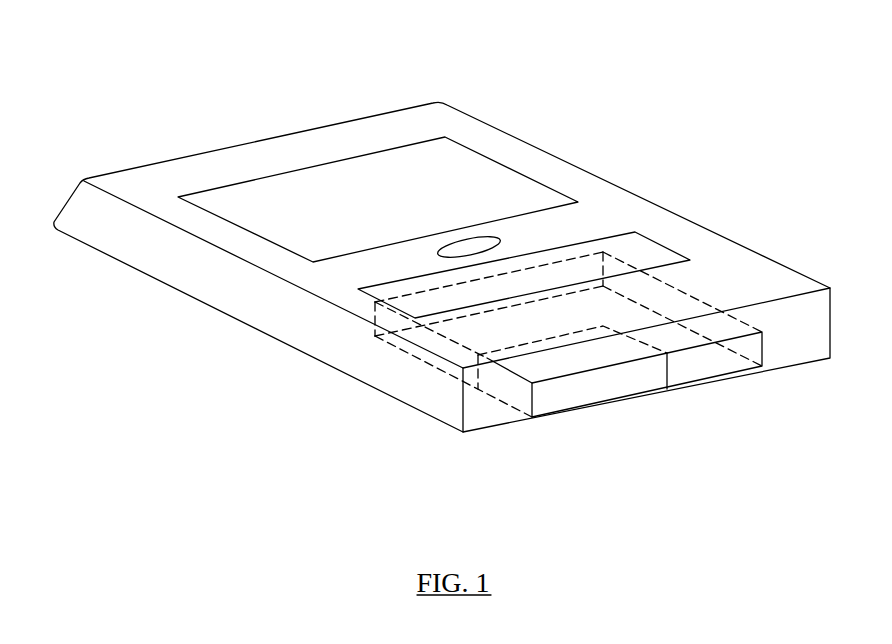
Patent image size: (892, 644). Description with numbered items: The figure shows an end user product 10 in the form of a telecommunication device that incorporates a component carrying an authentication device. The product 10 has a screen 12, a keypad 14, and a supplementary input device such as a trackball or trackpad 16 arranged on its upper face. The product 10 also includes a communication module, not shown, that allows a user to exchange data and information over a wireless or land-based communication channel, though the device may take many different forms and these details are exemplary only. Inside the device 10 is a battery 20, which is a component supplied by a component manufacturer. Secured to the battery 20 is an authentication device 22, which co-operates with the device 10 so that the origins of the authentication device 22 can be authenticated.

The product 10 is at (616, 173).
The screen 12 is at (297, 187).
The keypad 14 is at (378, 298).
The trackball or trackpad 16 is at (463, 233).
The battery 20 is at (713, 368).
The authentication device 22 is at (607, 380).